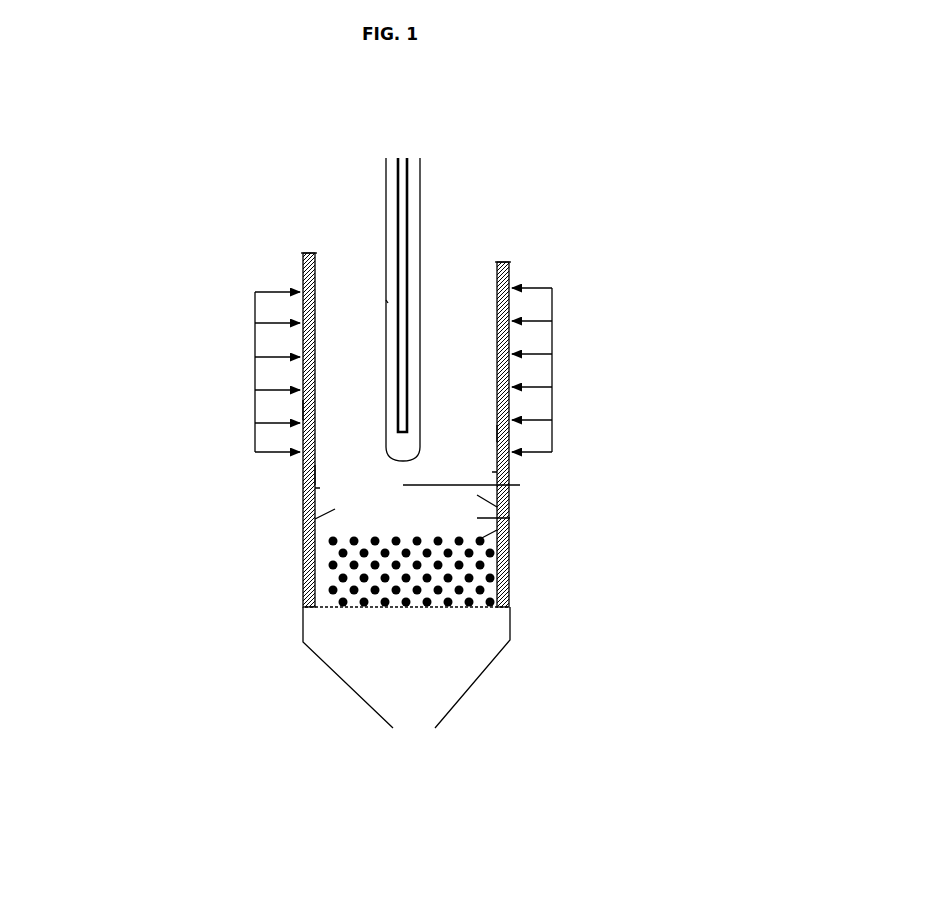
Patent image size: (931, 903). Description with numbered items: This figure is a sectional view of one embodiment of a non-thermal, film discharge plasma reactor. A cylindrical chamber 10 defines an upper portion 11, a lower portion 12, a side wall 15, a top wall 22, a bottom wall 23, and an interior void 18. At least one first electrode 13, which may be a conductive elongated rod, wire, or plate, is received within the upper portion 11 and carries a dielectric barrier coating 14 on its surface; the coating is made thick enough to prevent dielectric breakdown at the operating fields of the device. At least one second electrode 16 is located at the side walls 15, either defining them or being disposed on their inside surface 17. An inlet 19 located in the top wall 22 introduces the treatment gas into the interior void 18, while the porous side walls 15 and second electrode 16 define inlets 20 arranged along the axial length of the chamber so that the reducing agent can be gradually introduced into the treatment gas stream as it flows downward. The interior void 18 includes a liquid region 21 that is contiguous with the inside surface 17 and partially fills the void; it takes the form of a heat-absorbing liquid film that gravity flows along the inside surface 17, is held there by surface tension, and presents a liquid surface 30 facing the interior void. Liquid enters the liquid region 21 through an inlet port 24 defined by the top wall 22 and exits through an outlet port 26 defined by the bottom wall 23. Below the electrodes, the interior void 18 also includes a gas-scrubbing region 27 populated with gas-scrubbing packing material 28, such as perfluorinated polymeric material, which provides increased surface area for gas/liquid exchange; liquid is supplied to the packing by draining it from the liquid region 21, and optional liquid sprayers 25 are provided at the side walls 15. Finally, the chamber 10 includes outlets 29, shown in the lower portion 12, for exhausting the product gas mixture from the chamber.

The chamber 10 is at (603, 318).
The upper portion 11 is at (467, 303).
The lower portion 12 is at (352, 482).
The first electrode 13 is at (393, 190).
The dielectric barrier coating 14 is at (422, 200).
The side wall 15 is at (300, 417).
The second electrode 16 is at (300, 275).
The inside surface 17 is at (496, 433).
The interior void 18 is at (520, 486).
The inlet 19 is at (328, 252).
The inlet 20 is at (258, 372).
The liquid region 21 is at (305, 488).
The top wall 22 is at (375, 243).
The bottom wall 23 is at (337, 672).
The inlet port 24 is at (316, 250).
The liquid sprayers 25 is at (335, 509).
The outlet port 26 is at (415, 790).
The gas-scrubbing region 27 is at (510, 595).
The gas-scrubbing packing material 28 is at (508, 552).
The outlet 29 is at (325, 575).
The liquid surface 30 is at (319, 410).